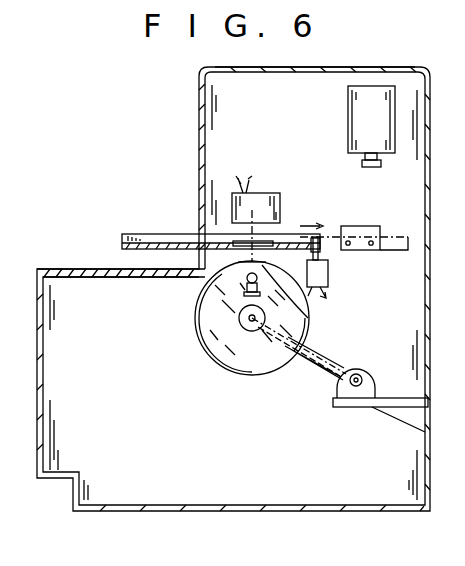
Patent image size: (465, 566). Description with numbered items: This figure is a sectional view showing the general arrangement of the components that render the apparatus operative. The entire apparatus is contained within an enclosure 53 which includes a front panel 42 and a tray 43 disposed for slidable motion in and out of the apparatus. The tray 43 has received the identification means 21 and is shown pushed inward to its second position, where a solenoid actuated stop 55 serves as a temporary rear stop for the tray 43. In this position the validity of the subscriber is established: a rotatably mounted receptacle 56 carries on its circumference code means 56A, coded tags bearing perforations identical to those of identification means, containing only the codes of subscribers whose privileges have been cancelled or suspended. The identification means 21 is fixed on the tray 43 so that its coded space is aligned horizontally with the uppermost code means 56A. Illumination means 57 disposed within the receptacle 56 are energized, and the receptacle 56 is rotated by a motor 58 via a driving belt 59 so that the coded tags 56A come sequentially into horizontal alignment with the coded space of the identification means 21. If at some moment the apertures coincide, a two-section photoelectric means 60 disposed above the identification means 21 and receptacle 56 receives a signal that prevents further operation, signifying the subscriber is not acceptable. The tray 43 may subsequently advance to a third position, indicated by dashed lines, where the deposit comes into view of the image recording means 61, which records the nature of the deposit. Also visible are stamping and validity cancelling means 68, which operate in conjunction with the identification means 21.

The identification means 21 is at (262, 243).
The front panel 42 is at (200, 112).
The tray 43 is at (122, 244).
The enclosure 53 is at (380, 67).
The solenoid actuated stop 55 is at (328, 274).
The receptacle 56 is at (222, 339).
The code means 56A is at (198, 320).
The illumination means 57 is at (308, 318).
The motor 58 is at (364, 365).
The driving belt 59 is at (314, 374).
The photoelectric means 60 is at (270, 194).
The image recording means 61 is at (385, 103).
The stamping and validity cancelling means 68 is at (362, 226).